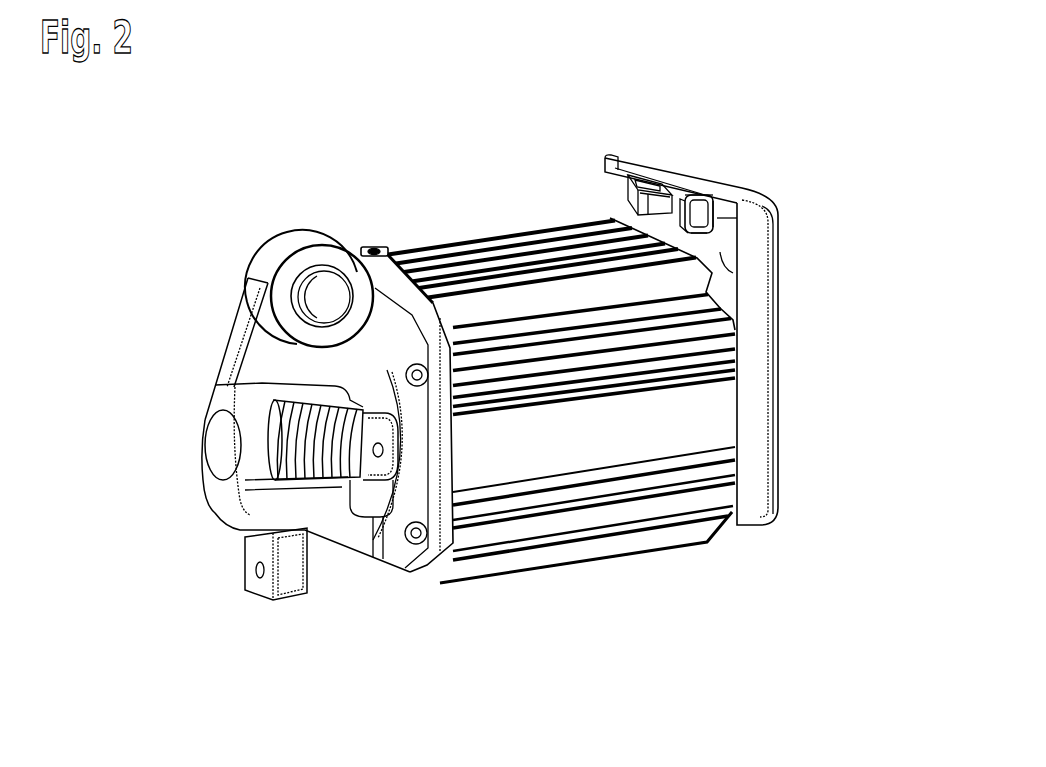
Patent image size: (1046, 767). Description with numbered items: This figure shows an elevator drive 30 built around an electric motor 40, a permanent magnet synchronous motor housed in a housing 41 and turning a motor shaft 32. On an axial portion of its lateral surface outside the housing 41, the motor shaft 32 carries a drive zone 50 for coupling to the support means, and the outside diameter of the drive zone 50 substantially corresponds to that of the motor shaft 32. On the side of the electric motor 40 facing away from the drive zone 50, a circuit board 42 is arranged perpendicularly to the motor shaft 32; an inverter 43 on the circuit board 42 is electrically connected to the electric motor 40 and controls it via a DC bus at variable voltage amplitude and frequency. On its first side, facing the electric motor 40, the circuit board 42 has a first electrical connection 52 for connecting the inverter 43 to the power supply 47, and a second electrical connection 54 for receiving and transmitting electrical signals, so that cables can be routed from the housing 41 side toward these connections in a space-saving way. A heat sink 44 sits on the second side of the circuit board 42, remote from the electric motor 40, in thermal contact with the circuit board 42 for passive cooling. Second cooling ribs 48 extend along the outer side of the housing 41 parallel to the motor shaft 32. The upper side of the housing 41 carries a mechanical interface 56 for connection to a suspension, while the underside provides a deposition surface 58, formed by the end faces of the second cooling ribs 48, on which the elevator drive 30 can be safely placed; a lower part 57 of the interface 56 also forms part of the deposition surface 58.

The elevator drive 30 is at (347, 150).
The motor shaft 32 is at (322, 472).
The electric motor 40 is at (447, 226).
The housing 41 is at (717, 408).
The circuit board 42 is at (724, 270).
The inverter 43 is at (704, 199).
The heat sink 44 is at (780, 347).
The power supply 47 is at (630, 196).
The second cooling ribs 48 is at (673, 553).
The drive zone 50 is at (280, 388).
The first electrical connection 52 is at (628, 189).
The second electrical connection 54 is at (706, 191).
The mechanical interface 56 is at (678, 166).
The lower part 57 is at (262, 588).
The deposition surface 58 is at (623, 572).